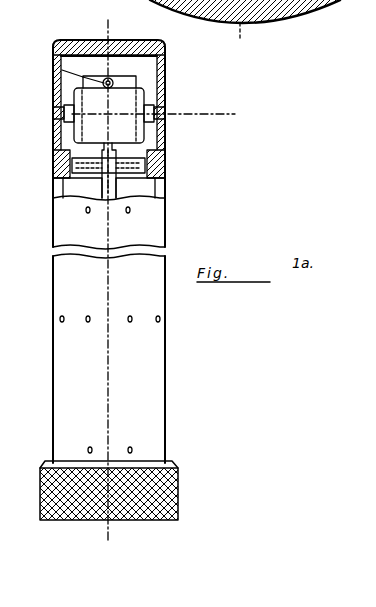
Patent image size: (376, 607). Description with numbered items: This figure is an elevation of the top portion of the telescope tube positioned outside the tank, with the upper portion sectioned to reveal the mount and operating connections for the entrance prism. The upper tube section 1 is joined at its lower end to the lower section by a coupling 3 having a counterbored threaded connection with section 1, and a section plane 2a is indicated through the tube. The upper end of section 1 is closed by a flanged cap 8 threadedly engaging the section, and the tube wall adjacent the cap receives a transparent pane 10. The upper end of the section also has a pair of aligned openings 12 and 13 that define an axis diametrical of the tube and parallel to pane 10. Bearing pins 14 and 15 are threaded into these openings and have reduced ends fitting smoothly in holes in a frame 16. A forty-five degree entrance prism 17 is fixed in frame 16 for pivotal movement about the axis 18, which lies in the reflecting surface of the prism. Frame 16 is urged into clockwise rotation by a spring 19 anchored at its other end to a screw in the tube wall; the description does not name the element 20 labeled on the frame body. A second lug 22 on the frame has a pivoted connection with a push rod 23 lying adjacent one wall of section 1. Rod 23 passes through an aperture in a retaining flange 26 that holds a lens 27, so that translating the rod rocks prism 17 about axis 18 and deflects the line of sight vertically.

The upper tube section 1 is at (166, 391).
The section line 2a is at (116, 28).
The coupling 3 is at (178, 500).
The flanged cap 8 is at (139, 43).
The transparent pane 10 is at (128, 78).
The aligned opening 12 is at (74, 133).
The aligned opening 13 is at (165, 124).
The bearing pin 14 is at (60, 110).
The bearing pin 15 is at (163, 109).
The frame 16 is at (75, 138).
The entrance prism 17 is at (160, 150).
The axis 18 is at (205, 116).
The spring 19 is at (62, 70).
The pivot block 20 is at (109, 115).
The second lug 22 is at (109, 115).
The push rod 23 is at (110, 190).
The retaining flange 26 is at (77, 174).
The lens 27 is at (140, 174).